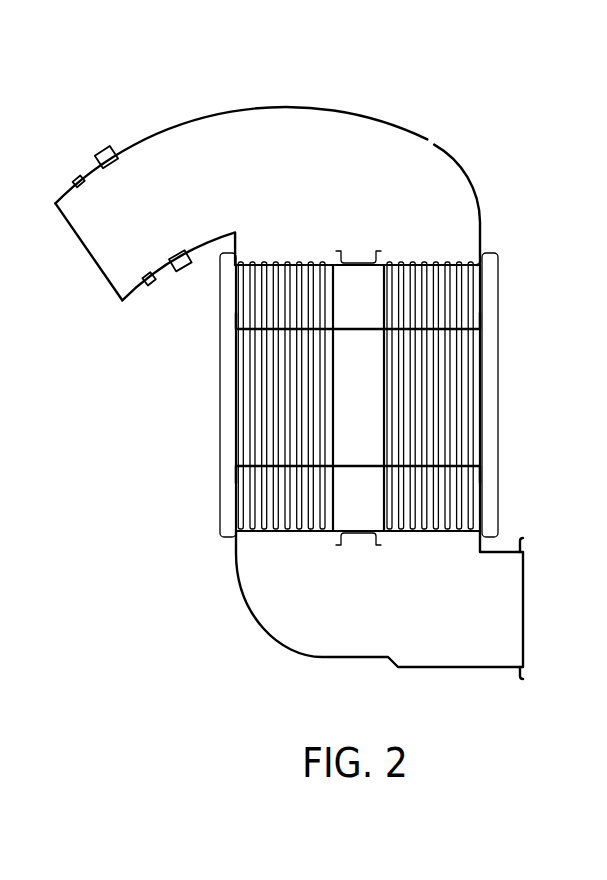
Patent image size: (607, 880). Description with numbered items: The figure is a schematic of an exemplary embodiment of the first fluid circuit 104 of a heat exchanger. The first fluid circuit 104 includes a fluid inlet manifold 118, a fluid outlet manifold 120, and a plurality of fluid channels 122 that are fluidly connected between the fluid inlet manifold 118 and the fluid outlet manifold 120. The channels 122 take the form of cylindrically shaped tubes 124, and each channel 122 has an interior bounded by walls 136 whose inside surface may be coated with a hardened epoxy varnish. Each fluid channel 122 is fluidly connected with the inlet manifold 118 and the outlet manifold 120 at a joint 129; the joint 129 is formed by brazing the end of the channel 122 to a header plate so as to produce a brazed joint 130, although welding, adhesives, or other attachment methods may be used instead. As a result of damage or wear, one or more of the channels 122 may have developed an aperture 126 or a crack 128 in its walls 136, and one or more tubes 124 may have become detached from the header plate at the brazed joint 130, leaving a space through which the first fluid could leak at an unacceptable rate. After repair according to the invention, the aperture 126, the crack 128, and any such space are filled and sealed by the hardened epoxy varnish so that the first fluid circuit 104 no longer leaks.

The first fluid circuit 104 is at (398, 125).
The fluid inlet manifold 118 is at (431, 143).
The joint 129 is at (440, 179).
The brazed joint 130 is at (442, 265).
The crack 128 is at (280, 385).
The walls 136 is at (467, 385).
The aperture 126 is at (450, 343).
The cylindrically shaped tubes 124 is at (473, 492).
The fluid channel 122 is at (384, 375).
The fluid outlet manifold 120 is at (435, 658).